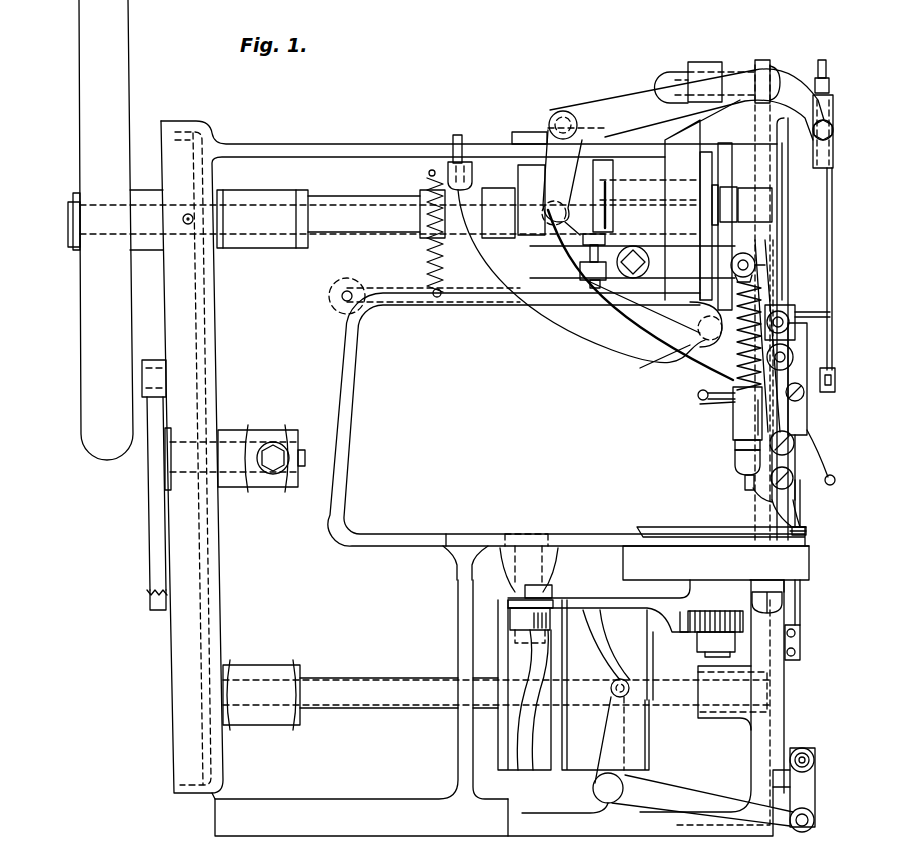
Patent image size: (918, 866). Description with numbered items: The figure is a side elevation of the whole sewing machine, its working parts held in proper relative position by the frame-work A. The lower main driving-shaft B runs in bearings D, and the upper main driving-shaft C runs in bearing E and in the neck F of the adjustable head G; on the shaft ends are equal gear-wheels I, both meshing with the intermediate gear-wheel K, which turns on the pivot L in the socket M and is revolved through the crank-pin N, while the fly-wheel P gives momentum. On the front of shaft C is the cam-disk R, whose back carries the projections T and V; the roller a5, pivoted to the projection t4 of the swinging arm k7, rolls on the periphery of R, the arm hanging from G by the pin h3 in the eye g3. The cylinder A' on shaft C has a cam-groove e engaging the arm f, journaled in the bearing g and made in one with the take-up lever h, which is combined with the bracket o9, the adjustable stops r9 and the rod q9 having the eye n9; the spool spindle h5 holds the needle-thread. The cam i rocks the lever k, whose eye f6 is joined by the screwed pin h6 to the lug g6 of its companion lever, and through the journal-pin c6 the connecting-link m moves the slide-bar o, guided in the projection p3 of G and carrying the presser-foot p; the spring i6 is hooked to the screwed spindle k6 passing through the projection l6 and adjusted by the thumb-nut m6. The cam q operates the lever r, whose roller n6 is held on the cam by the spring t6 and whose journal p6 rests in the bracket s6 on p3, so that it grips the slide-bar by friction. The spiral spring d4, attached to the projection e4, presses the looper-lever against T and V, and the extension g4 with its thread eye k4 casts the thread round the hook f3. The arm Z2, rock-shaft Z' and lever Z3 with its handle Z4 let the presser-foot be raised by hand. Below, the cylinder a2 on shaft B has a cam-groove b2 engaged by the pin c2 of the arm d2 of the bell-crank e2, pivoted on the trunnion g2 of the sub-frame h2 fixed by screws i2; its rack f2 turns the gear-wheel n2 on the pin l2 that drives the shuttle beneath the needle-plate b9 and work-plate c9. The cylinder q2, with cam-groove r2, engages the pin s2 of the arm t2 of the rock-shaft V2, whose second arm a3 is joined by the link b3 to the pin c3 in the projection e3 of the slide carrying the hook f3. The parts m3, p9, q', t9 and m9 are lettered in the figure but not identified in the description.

The fly-wheel P is at (100, 230).
The upper main driving-shaft C is at (390, 220).
The bearing E is at (262, 219).
The spindle h5 is at (190, 214).
The gear-wheel I is at (165, 160).
The frame-work A is at (501, 477).
The lever Z3 is at (500, 305).
The handle Z4 is at (355, 312).
The spring t6 is at (425, 240).
The cam q is at (401, 206).
The roller n6 is at (458, 162).
The cam i is at (497, 194).
The cylinder A' is at (531, 197).
The bearing g is at (525, 138).
The arm f is at (562, 177).
The take-up lever h is at (686, 104).
The neck F is at (647, 190).
The adjustable head G is at (702, 200).
The cam-disk R is at (728, 143).
The projection T is at (706, 224).
The projection V is at (708, 203).
The roller a5 is at (733, 195).
The projection t4 is at (755, 205).
The rod m3 is at (760, 60).
The eye g3 is at (705, 62).
The pin h3 is at (782, 72).
The adjustable stops r9 is at (829, 85).
The nut p9 is at (835, 130).
The bracket o9 is at (833, 152).
The rod q9 is at (832, 240).
The swinging arm k7 is at (788, 238).
The lever k is at (632, 266).
The screwed pin h6 is at (585, 236).
The cam-groove e is at (558, 234).
The lug g6 is at (550, 318).
The eye f6 is at (575, 325).
The lever r is at (612, 305).
The rock-shaft Z' is at (653, 363).
The arm Z2 is at (704, 314).
The eye q' is at (743, 256).
The spring i6 is at (762, 287).
The screwed journal-pin c6 is at (757, 264).
The journal p6 is at (790, 355).
The lever t9 is at (832, 313).
The eye n9 is at (838, 380).
The projection p3 is at (733, 420).
The connecting-link m is at (765, 419).
The bracket s6 is at (801, 397).
The spiral spring d4 is at (698, 385).
The projection e4 is at (700, 404).
The projection l6 is at (735, 444).
The thumb-nut m6 is at (735, 460).
The screwed spindle k6 is at (745, 480).
The eye k4 is at (797, 490).
The extension g4 is at (765, 492).
The wire m9 is at (835, 478).
The slide-bar o is at (774, 505).
The presser-foot p is at (806, 522).
The needle-plate b9 is at (808, 531).
The work-plate c9 is at (700, 530).
The sub-frame h2 is at (580, 524).
The socket M is at (272, 430).
The pivot L is at (308, 455).
The crank-pin N is at (142, 370).
The intermediate gear-wheel K is at (182, 600).
The bearings D is at (496, 695).
The lower main driving-shaft B is at (399, 693).
The trunnion g2 is at (552, 572).
The arm d2 is at (520, 602).
The pin c2 is at (535, 618).
The cylinder a2 is at (524, 685).
The bell-crank e2 is at (610, 600).
The gear-wheel n2 is at (717, 612).
The pin l2 is at (700, 655).
The segmental toothed gear-rack f2 is at (684, 626).
The cylinder q2 is at (639, 655).
The cam-groove r2 is at (606, 645).
The cam-groove b2 is at (533, 700).
The pin s2 is at (611, 690).
The arm t2 is at (606, 733).
The rock-shaft V2 is at (593, 790).
The arm a3 is at (702, 800).
The projection e3 is at (795, 752).
The pin c3 is at (815, 756).
The link b3 is at (815, 792).
The screws i2 is at (784, 598).
The hook or needle f3 is at (802, 615).